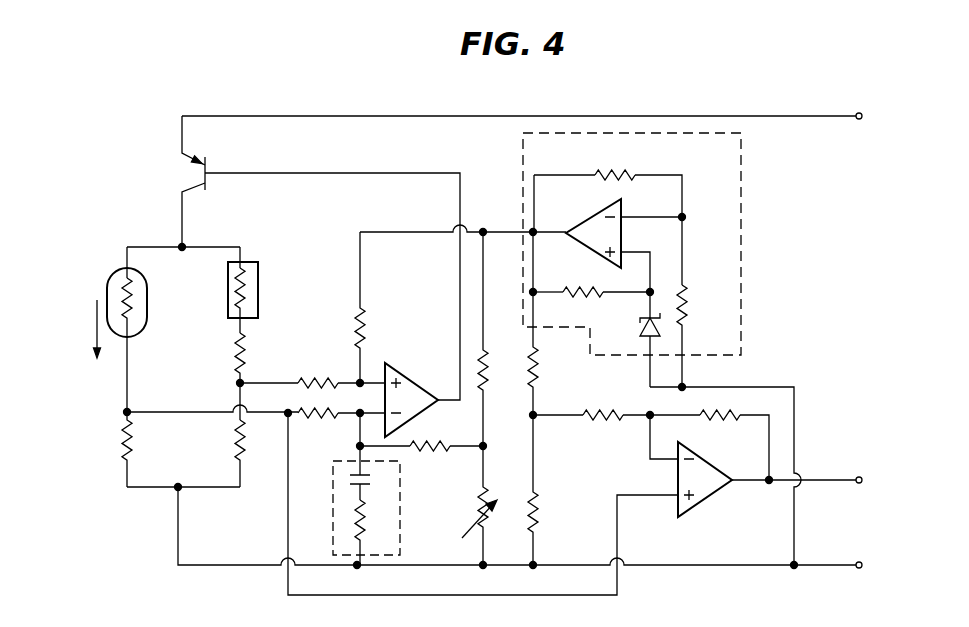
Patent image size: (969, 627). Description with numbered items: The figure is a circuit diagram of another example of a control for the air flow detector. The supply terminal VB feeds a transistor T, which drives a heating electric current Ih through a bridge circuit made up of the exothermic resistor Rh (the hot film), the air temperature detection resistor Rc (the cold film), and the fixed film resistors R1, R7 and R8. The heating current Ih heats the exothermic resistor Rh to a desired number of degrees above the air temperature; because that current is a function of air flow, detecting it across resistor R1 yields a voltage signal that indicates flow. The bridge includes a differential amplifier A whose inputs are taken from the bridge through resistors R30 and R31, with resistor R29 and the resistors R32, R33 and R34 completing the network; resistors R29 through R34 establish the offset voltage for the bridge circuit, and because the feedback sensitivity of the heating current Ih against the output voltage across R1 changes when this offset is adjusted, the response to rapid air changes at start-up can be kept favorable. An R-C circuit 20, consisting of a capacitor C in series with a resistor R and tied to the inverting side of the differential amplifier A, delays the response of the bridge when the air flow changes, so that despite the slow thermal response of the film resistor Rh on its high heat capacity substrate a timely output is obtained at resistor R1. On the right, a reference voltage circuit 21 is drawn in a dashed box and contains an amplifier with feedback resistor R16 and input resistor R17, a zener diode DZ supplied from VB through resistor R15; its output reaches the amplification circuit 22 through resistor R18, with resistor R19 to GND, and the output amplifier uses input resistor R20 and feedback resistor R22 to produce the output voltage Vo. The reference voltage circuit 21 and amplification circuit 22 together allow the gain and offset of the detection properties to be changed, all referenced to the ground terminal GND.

The transistor T is at (178, 181).
The exothermic resistor Rh is at (103, 329).
The heating electric current Ih is at (82, 329).
The air temperature detection resistor Rc is at (257, 290).
The fixed film resistor R8 is at (256, 376).
The fixed film resistor R1 is at (108, 449).
The fixed film resistor R7 is at (256, 453).
The offset resistor R29 is at (337, 307).
The offset resistor R30 is at (318, 368).
The offset resistor R31 is at (318, 427).
The differential amplifier A is at (403, 374).
The offset resistor R32 is at (489, 372).
The offset resistor R33 is at (430, 460).
The offset resistor R34 is at (463, 505).
The R-C circuit 20 is at (333, 520).
The capacitor C is at (368, 473).
The resistor R is at (370, 532).
The reference voltage circuit 21 is at (741, 224).
The resistor R16 is at (614, 163).
The resistor R17 is at (581, 280).
The zener diode DZ is at (629, 339).
The resistor R15 is at (703, 336).
The resistor R18 is at (555, 323).
The resistor R20 is at (603, 430).
The resistor R22 is at (718, 430).
The amplification circuit 22 is at (704, 499).
The resistor R19 is at (555, 490).
The supply voltage terminal VB is at (873, 119).
The output voltage signal Vo is at (873, 481).
The ground terminal GND is at (884, 566).